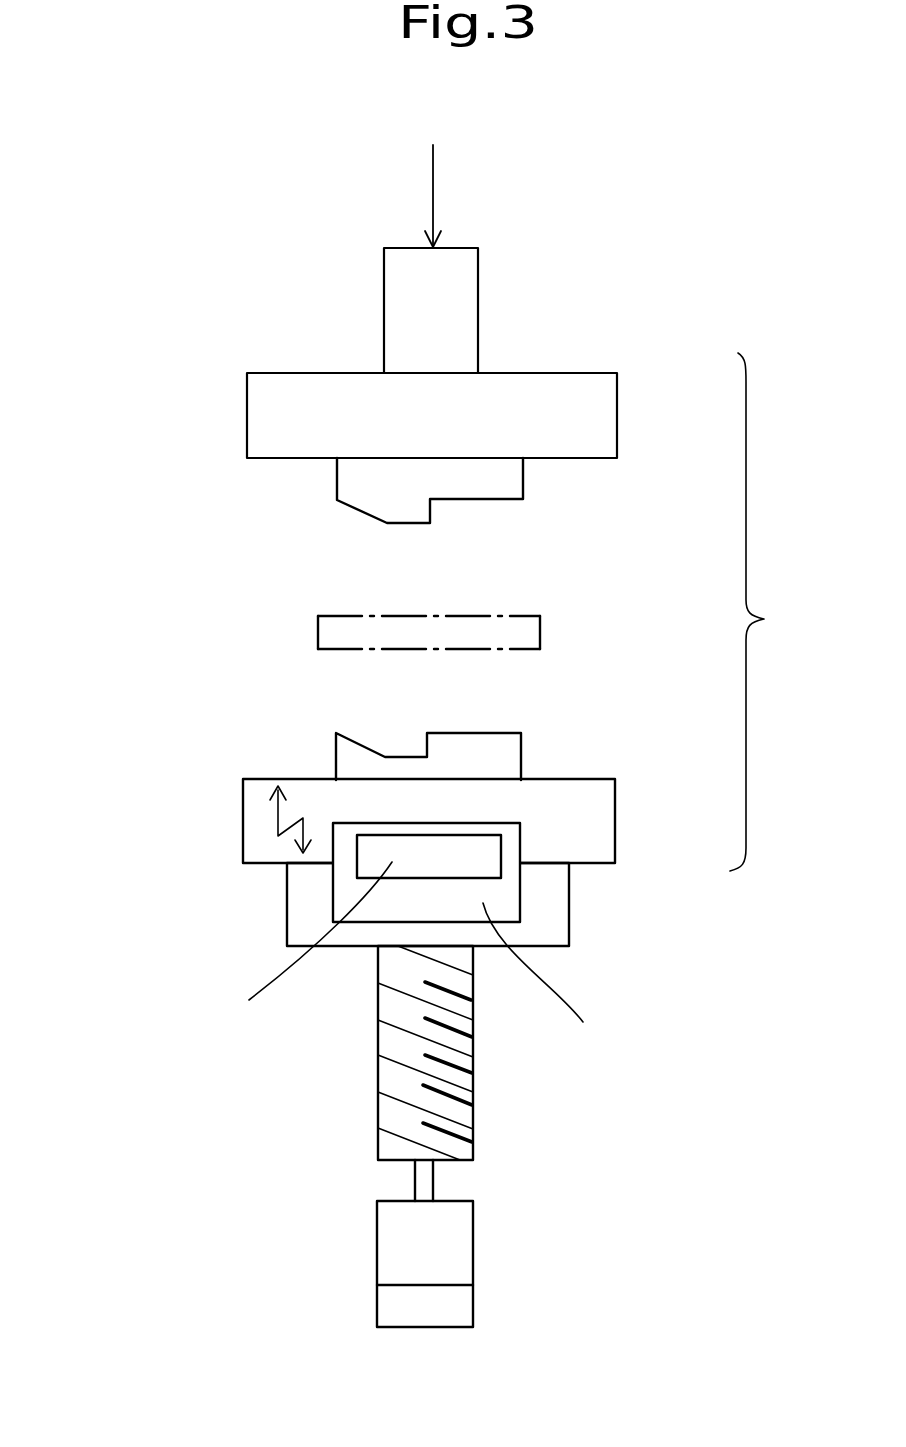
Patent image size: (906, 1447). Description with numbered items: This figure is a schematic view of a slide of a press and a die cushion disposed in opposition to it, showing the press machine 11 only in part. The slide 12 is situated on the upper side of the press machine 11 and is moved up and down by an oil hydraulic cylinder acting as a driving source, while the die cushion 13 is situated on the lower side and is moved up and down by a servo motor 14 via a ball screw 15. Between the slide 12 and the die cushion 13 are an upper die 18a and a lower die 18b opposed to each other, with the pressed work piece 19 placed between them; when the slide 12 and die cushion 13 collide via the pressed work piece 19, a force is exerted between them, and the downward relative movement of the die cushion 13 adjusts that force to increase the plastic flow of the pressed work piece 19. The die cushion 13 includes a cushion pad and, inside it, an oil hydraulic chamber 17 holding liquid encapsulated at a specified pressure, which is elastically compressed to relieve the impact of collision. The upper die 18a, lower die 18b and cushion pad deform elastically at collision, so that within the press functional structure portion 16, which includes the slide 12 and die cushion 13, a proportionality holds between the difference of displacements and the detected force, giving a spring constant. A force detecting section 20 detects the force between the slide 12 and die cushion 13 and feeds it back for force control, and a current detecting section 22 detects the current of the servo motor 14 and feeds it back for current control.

The press machine 11 is at (678, 202).
The slide 12 is at (596, 416).
The die cushion 13 is at (615, 817).
The servo motor 14 is at (475, 1248).
The ball screw 15 is at (378, 1052).
The press functional structure portion 16 is at (767, 612).
The oil hydraulic chamber 17 is at (527, 900).
The upper die 18a is at (340, 487).
The lower die 18b is at (350, 758).
The pressed work piece 19 is at (318, 636).
The force detecting section 20 is at (355, 865).
The current detecting section 22 is at (377, 1305).